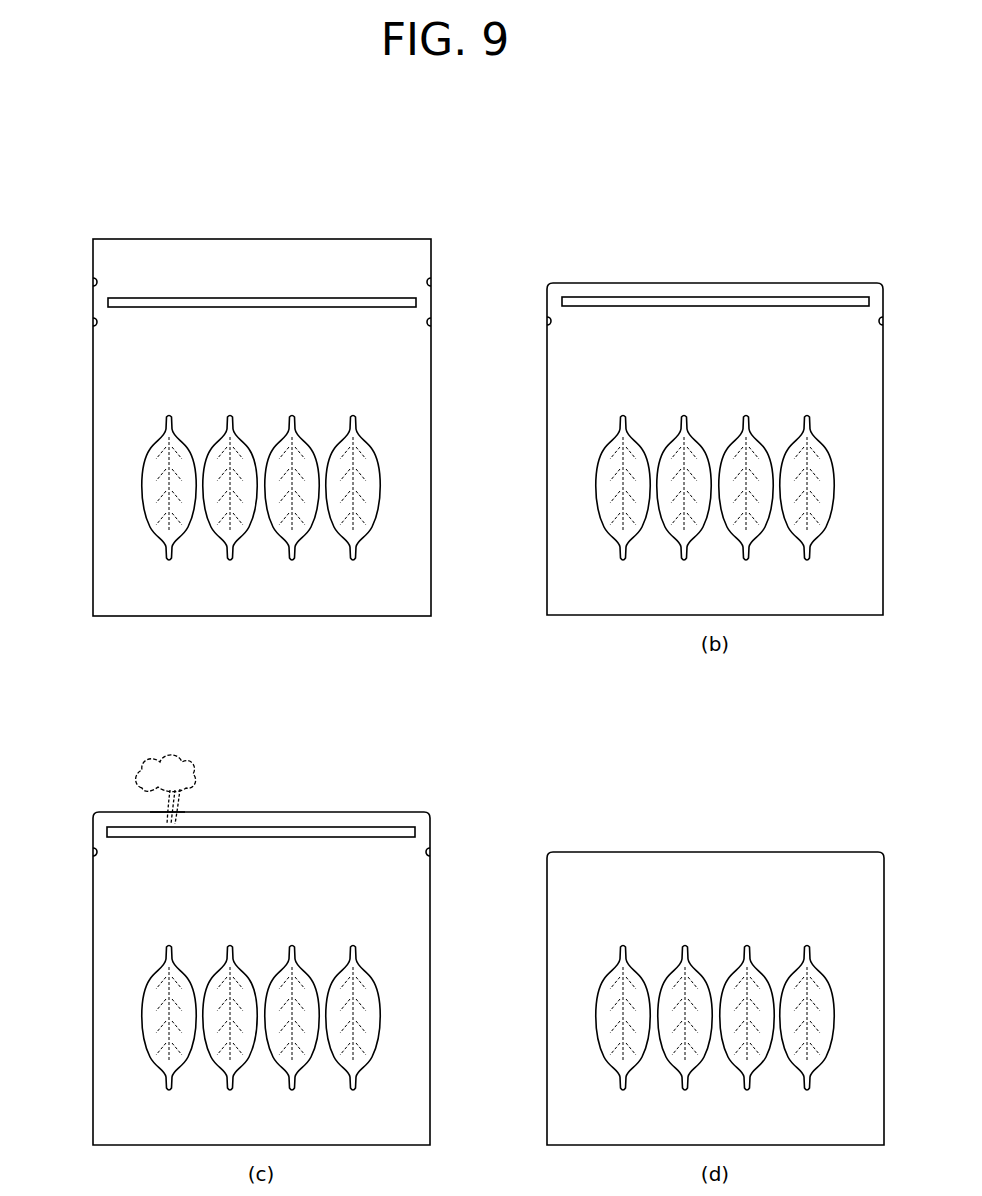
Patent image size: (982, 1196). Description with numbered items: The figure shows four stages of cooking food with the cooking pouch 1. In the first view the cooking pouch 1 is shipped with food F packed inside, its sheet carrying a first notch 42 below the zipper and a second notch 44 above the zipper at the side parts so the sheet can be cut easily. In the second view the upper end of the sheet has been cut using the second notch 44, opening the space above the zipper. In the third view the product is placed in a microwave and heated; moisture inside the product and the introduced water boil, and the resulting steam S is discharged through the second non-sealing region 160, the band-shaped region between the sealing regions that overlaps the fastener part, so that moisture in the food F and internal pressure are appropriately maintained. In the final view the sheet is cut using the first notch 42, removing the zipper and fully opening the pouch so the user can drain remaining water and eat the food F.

The cooking pouch 1 is at (354, 228).
The first notch 42 is at (93, 322).
The second notch 44 is at (93, 282).
The second non-sealing region 160 is at (165, 822).
The food F is at (180, 452).
The steam discharge S is at (174, 789).